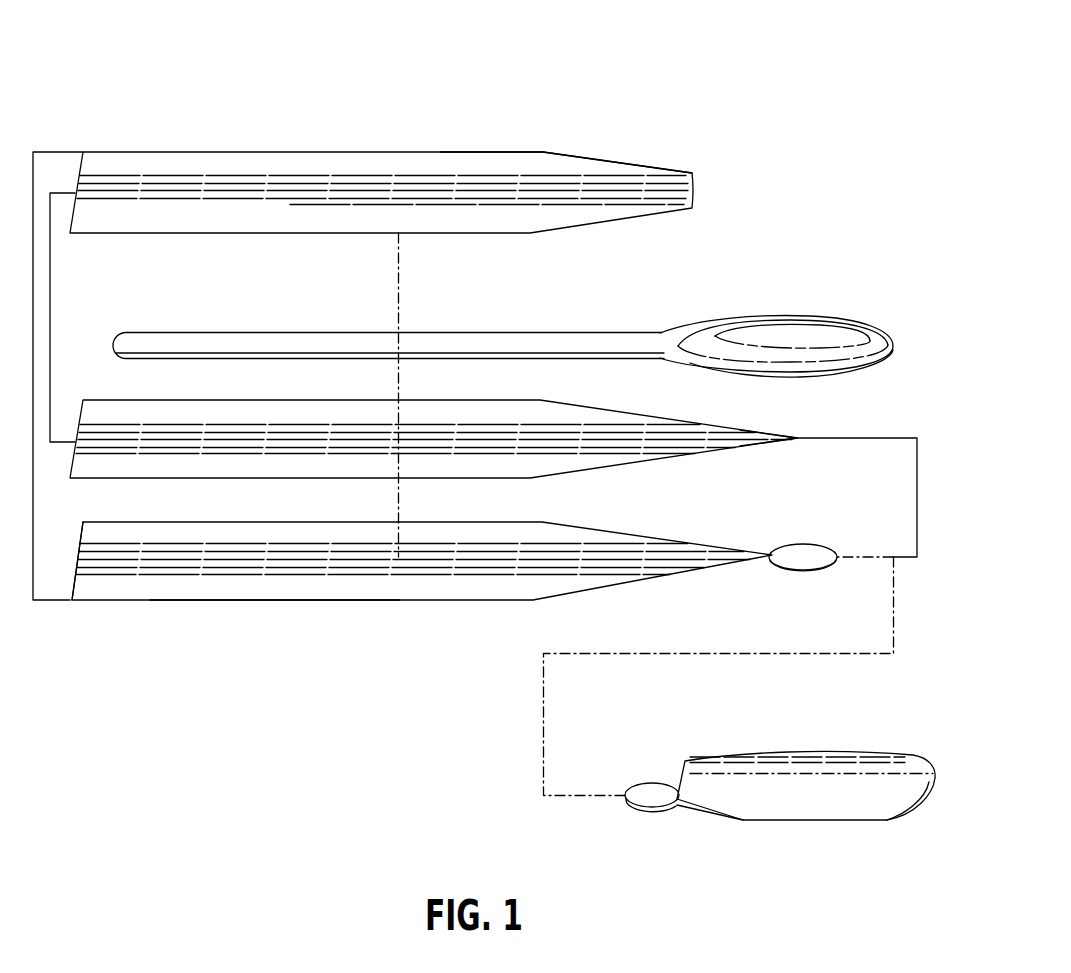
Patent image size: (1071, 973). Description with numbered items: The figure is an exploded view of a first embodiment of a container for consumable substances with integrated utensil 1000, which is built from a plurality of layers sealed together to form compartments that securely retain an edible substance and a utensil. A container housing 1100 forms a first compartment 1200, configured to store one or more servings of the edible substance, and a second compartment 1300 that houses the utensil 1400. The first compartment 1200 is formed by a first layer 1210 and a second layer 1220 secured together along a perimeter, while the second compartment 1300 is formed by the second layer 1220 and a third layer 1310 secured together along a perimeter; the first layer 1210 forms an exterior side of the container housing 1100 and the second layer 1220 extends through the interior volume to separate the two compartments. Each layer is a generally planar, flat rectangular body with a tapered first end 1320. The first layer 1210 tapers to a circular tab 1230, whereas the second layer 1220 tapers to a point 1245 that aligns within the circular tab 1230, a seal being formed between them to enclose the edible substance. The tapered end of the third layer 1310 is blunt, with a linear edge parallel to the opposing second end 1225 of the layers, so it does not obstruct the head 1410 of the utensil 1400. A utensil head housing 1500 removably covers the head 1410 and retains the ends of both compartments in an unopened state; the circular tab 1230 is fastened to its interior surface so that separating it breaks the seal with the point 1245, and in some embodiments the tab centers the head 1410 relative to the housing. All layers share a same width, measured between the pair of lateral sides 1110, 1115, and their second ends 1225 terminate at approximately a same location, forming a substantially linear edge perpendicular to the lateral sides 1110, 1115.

The container for consumable substances with integrated utensil 1000 is at (712, 40).
The container housing 1100 is at (45, 152).
The lateral side 1110 is at (226, 152).
The lateral side 1115 is at (335, 600).
The first compartment 1200 is at (917, 495).
The first layer 1210 is at (202, 600).
The second layer 1220 is at (677, 460).
The second end 1225 is at (80, 562).
The circular tab 1230 is at (800, 570).
The point 1245 is at (773, 430).
The second compartment 1300 is at (50, 312).
The third layer 1310 is at (521, 152).
The tapered first end 1320 is at (605, 160).
The utensil 1400 is at (532, 348).
The head 1410 is at (865, 368).
The utensil head housing 1500 is at (803, 822).